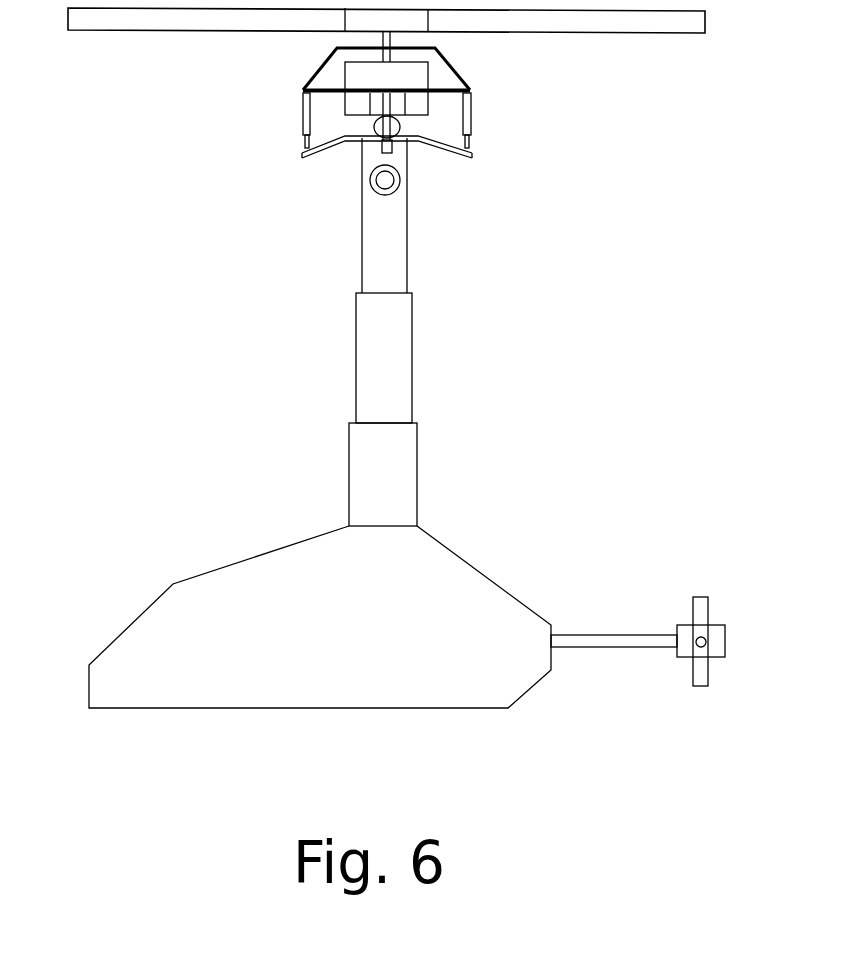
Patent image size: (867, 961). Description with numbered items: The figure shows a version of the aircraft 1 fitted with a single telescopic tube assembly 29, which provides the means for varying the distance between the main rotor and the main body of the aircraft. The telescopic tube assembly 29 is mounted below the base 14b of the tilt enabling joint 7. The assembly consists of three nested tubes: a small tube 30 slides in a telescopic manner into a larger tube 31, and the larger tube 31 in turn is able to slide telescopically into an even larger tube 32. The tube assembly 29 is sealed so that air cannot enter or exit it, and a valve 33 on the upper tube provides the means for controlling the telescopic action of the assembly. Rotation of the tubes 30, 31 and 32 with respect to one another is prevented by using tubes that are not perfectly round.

The aircraft 1 is at (248, 718).
The tilt enabling joint 7 is at (500, 128).
The base of the tilt enabling joint 14b is at (420, 142).
The telescopic tube assembly 29 is at (380, 347).
The small tube 30 is at (395, 255).
The larger tube 31 is at (370, 348).
The even larger tube 32 is at (370, 497).
The valve 33 is at (385, 180).